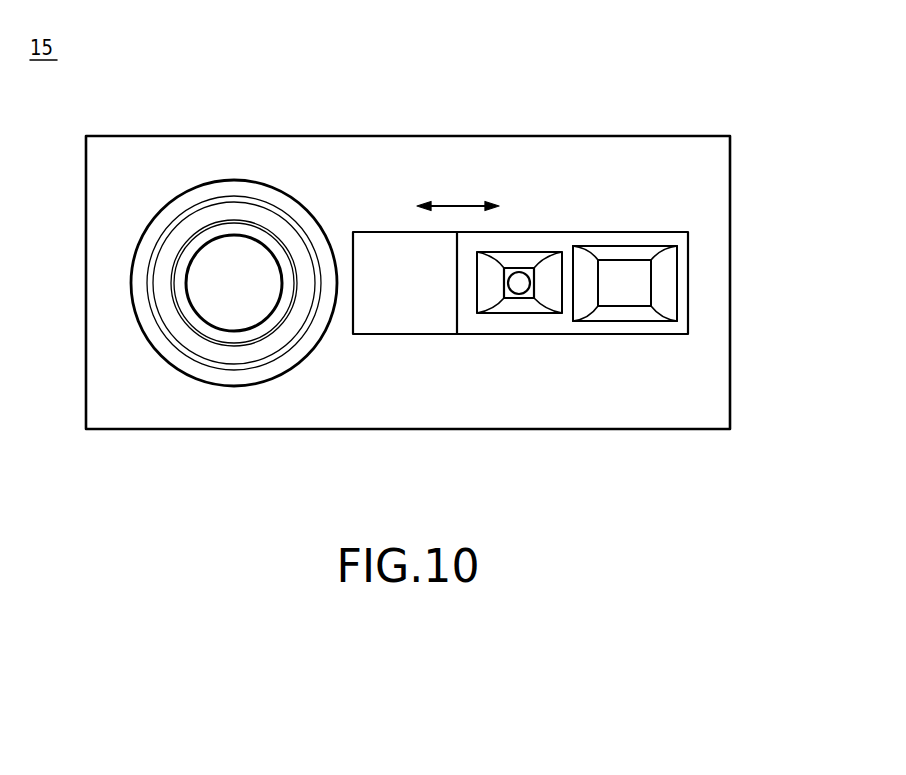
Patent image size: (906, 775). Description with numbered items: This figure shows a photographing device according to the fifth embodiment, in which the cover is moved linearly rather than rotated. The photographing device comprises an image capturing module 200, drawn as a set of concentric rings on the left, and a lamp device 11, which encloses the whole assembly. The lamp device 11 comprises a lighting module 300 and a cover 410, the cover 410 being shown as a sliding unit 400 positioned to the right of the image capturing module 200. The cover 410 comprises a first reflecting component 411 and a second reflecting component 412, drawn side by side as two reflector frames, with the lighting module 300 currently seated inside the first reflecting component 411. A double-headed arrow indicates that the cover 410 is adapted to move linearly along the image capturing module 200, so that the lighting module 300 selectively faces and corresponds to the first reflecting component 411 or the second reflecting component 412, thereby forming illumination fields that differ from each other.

The lamp device 11 is at (706, 122).
The image capturing module 200 is at (202, 302).
The lighting module 300 is at (521, 272).
The movable module 400 is at (711, 319).
The cover 410 is at (682, 272).
The first reflecting component 411 is at (537, 331).
The second reflecting component 412 is at (642, 337).